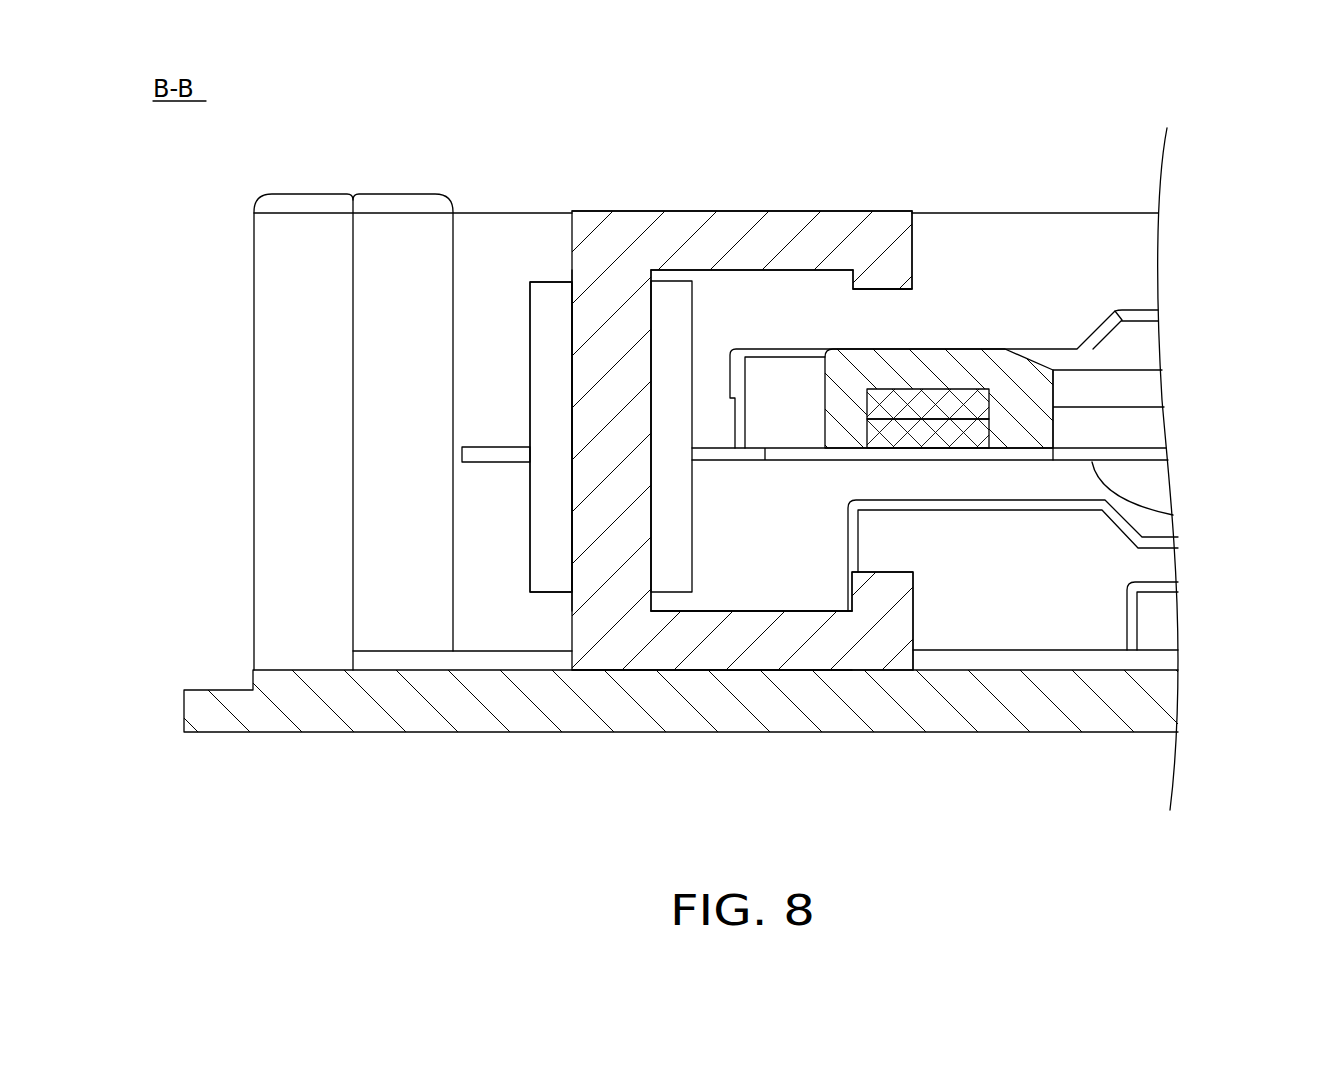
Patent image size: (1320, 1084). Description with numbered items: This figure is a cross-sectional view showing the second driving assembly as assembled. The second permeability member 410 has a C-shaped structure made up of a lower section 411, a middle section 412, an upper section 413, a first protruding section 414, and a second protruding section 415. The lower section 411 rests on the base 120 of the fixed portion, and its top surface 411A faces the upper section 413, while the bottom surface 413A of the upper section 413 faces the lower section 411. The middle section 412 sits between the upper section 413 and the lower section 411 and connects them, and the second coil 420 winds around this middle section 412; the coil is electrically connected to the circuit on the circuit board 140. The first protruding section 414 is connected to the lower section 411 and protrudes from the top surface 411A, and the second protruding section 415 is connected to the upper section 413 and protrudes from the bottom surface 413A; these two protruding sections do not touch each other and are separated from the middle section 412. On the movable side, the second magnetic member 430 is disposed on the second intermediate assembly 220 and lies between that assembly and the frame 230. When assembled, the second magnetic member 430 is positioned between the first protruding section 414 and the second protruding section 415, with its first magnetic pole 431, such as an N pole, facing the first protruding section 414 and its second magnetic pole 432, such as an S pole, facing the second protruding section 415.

The base 120 is at (268, 708).
The circuit board 140 is at (1108, 237).
The second intermediate assembly 220 is at (1103, 455).
The frame 230 is at (1030, 357).
The second permeability member 410 is at (622, 210).
The lower section 411 is at (718, 648).
The top surface of the lower section 411A is at (752, 610).
The middle section 412 is at (613, 452).
The upper section 413 is at (743, 228).
The bottom surface of the upper section 413A is at (812, 275).
The first protruding section 414 is at (882, 597).
The second protruding section 415 is at (885, 283).
The second coil 420 is at (549, 403).
The second magnetic member 430 is at (973, 417).
The first magnetic pole 431 is at (967, 440).
The second magnetic pole 432 is at (970, 402).